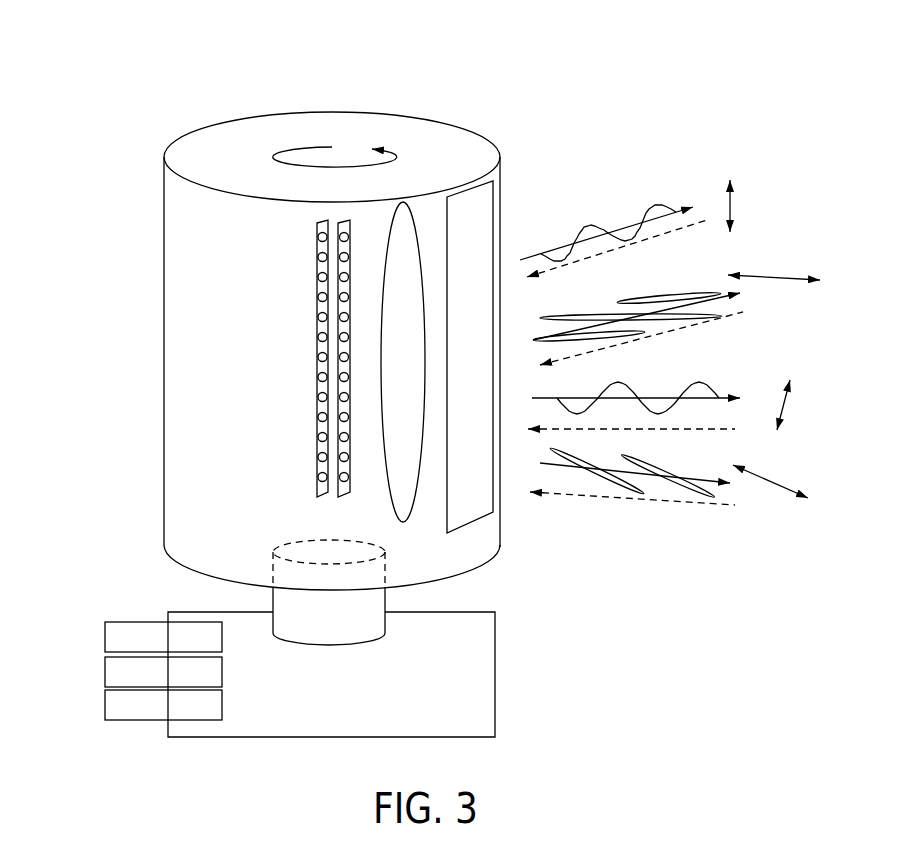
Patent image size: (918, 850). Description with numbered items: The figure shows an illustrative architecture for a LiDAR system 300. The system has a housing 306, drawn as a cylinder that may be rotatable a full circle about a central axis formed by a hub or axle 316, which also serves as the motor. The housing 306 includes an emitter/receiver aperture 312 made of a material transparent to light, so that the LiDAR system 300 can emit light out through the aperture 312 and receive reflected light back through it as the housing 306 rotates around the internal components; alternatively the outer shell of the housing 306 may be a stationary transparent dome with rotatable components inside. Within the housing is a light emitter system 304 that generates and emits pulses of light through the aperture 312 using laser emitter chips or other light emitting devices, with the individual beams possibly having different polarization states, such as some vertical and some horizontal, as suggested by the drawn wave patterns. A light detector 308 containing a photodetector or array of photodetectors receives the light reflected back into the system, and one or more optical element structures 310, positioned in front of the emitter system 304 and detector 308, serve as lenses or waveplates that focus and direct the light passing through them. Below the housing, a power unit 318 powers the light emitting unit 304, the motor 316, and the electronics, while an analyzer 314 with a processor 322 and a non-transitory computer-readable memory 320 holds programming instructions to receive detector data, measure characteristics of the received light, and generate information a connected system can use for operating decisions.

The LiDAR system 300 is at (242, 80).
The light emitter system 304 is at (342, 222).
The housing 306 is at (163, 205).
The light detector 308 is at (316, 232).
The optical element structure 310 is at (405, 200).
The emitter/receiver aperture 312 is at (478, 178).
The analyzer 314 is at (495, 672).
The hub or axle 316 is at (338, 632).
The power unit 318 is at (117, 638).
The non-transitory computer-readable memory 320 is at (117, 675).
The processor 322 is at (117, 708).